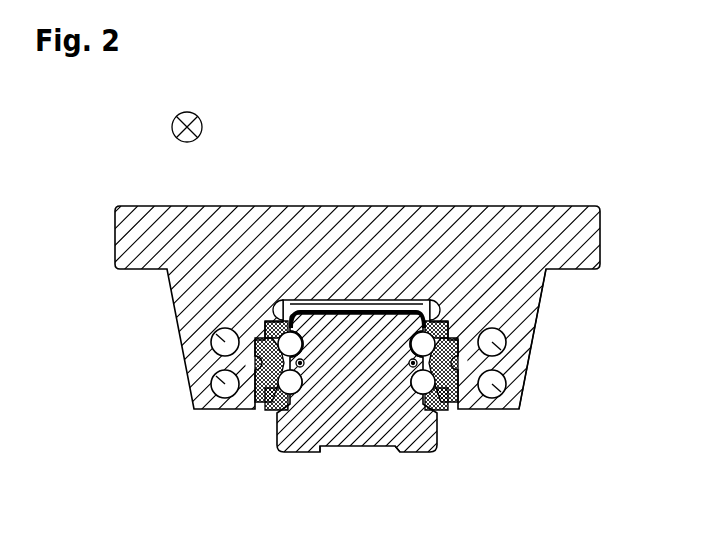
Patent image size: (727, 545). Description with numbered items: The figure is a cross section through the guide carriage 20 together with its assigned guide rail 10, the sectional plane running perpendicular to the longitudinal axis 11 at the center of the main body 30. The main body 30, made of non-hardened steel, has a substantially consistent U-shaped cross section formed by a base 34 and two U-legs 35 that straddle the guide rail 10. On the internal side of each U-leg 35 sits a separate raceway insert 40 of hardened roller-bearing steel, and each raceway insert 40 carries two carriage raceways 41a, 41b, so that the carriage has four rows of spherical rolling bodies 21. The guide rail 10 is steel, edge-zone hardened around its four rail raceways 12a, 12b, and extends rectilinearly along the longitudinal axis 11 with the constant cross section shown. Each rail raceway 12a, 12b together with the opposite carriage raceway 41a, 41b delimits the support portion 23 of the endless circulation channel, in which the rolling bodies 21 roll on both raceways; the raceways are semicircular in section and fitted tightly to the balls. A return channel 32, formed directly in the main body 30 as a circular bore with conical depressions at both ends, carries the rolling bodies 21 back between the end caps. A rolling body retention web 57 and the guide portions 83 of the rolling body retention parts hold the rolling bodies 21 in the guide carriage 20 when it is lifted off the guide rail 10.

The guide rail 10 is at (363, 446).
The longitudinal axis 11 is at (203, 125).
The first rail raceway 12a is at (288, 317).
The second rail raceway 12b is at (320, 447).
The guide carriage 20 is at (363, 261).
The main body 30 is at (466, 318).
The rolling body 21 is at (526, 313).
The support portion 23 is at (485, 298).
The return channel 32 is at (212, 340).
The base 34 is at (355, 299).
The U-leg 35 is at (250, 366).
The raceway insert 40 is at (192, 400).
The carriage raceway 41a is at (272, 320).
The second carriage raceway 41b is at (268, 404).
The rolling body retention web 57 is at (327, 310).
The guide portion 83 is at (266, 321).